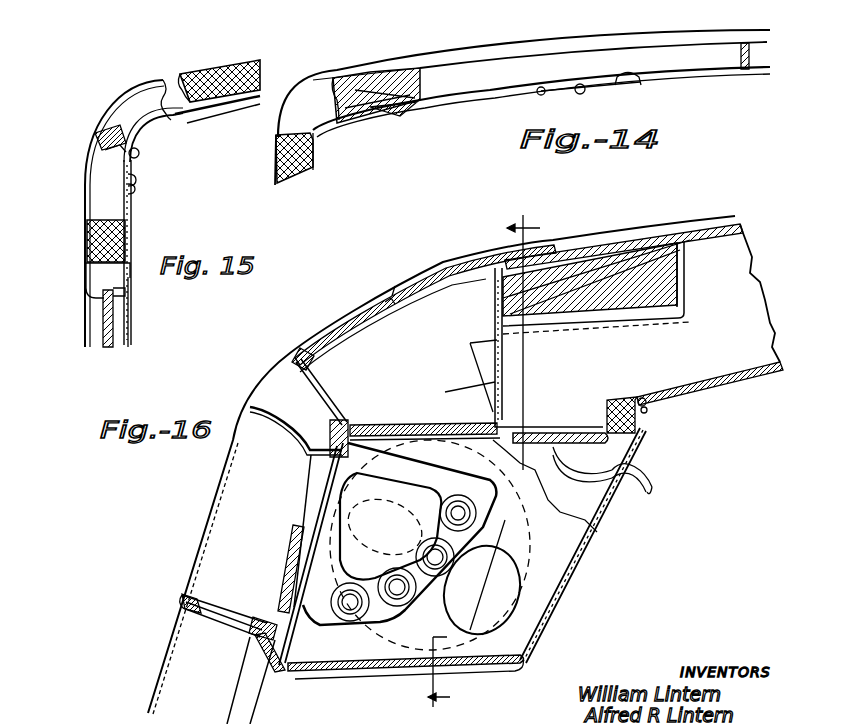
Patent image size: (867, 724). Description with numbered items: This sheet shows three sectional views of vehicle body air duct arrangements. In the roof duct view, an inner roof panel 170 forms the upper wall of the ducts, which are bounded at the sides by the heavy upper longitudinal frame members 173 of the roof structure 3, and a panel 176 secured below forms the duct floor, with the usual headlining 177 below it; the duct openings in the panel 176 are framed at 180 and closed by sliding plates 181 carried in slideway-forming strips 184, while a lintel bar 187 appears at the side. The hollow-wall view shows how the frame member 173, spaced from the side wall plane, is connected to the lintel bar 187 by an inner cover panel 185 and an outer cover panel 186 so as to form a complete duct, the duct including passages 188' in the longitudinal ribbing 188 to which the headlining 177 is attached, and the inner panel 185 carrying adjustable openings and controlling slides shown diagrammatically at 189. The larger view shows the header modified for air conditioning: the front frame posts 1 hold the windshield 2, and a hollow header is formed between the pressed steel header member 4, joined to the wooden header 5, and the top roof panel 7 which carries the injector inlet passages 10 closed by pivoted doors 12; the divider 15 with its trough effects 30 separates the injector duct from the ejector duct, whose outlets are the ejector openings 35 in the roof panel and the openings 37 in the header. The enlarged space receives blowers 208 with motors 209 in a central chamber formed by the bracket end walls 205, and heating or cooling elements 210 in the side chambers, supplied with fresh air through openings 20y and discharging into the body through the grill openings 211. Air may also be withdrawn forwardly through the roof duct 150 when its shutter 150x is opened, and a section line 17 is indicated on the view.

In FIG. 16, the front frame posts 1 is at (150, 678).
In FIG. 16, the windshield 2 is at (243, 697).
In FIG. 14, the roof structure 3 is at (620, 30).
In FIG. 16, the header member 4 is at (457, 425).
In FIG. 16, the wooden header member 5 is at (587, 242).
In FIG. 16, the outer header member 7 is at (205, 500).
In FIG. 16, the air inlet passages 10 is at (227, 612).
In FIG. 16, the injector control doors 12 is at (290, 570).
In FIG. 16, the divider 15 is at (320, 372).
In FIG. 16, the section line 17 is at (472, 461).
In FIG. 16, the openings 20y is at (312, 488).
In FIG. 16, the trough effects 30 is at (322, 425).
In FIG. 16, the ejector openings 35 is at (346, 318).
In FIG. 16, the ejector openings in the header 37 is at (468, 348).
In FIG. 16, the central injector duct 150 is at (695, 328).
In FIG. 16, the shutter 150x is at (545, 430).
In FIG. 14, the inner roof panel 170 is at (470, 55).
In FIG. 15, the upper longitudinal frame members 173 is at (210, 66).
In FIG. 14, the upper longitudinal frame members 173 is at (355, 72).
In FIG. 14, the panel 176 is at (472, 92).
In FIG. 15, the headlining 177 is at (198, 118).
In FIG. 14, the headlining 177 is at (425, 112).
In FIG. 14, the frames 180 is at (541, 96).
In FIG. 14, the sliding plates 181 is at (603, 79).
In FIG. 14, the slideway-forming strips 184 is at (550, 83).
In FIG. 15, the inner cover panel 185 is at (150, 138).
In FIG. 15, the outer cover panel 186 is at (118, 101).
In FIG. 15, the lintel bars 187 is at (87, 240).
In FIG. 14, the lintel bars 187 is at (315, 150).
In FIG. 15, the longitudinal ribbing 188 is at (92, 134).
In FIG. 15, the passages 188' is at (78, 159).
In FIG. 15, the adjustable openings and controlling slides 189 is at (136, 180).
In FIG. 16, the end walls 205 is at (598, 515).
In FIG. 16, the power operated blowers 208 is at (560, 552).
In FIG. 16, the motors 209 is at (402, 499).
In FIG. 16, the heating or cooling elements 210 is at (398, 580).
In FIG. 16, the grill openings 211 is at (345, 675).